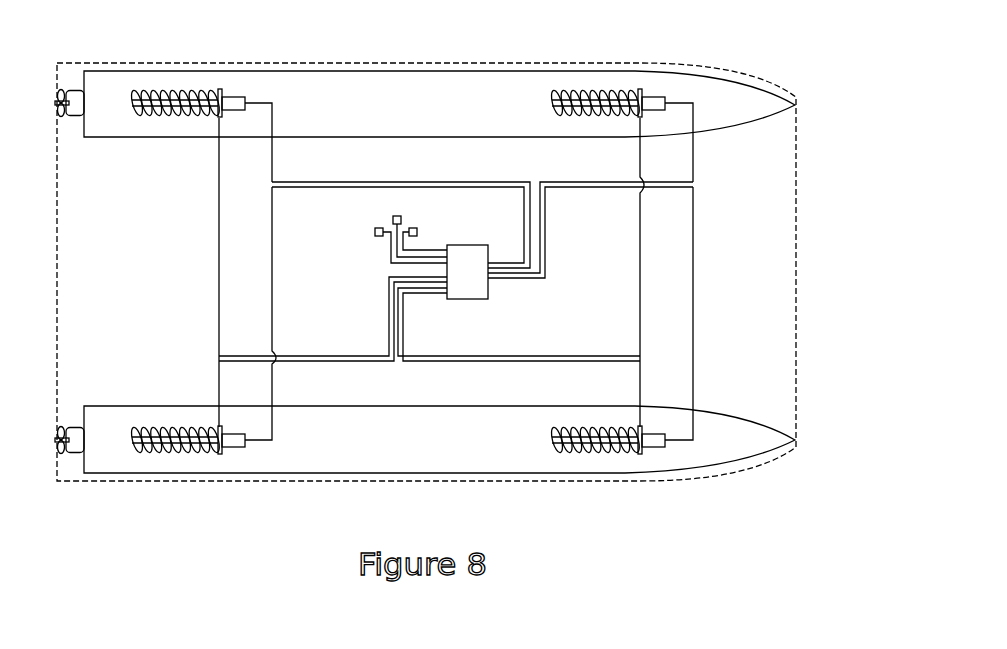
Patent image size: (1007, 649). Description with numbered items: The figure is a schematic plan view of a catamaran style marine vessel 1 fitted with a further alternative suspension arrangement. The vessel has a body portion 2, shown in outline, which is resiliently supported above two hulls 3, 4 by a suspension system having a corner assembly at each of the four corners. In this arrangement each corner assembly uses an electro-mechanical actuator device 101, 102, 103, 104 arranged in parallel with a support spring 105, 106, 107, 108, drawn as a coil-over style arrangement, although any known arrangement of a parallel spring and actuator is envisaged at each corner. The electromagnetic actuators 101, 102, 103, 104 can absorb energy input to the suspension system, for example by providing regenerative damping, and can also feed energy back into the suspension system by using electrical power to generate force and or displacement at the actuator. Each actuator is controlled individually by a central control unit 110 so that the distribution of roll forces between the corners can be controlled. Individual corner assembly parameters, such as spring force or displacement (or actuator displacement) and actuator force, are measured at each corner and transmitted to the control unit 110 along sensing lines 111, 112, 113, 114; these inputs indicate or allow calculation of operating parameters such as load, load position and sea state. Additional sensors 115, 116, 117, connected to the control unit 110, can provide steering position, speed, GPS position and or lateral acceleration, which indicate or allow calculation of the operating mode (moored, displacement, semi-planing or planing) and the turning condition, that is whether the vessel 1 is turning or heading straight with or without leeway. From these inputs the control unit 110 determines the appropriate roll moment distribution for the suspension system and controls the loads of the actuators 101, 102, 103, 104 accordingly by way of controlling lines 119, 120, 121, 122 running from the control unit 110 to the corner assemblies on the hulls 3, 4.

The marine vessel 1 is at (782, 53).
The body portion 2 is at (797, 191).
The hull 3 is at (362, 85).
The hull 4 is at (362, 458).
The electro-mechanical actuator device 101 is at (655, 99).
The electro-mechanical actuator device 102 is at (653, 444).
The electro-mechanical actuator device 103 is at (232, 101).
The electro-mechanical actuator device 104 is at (235, 444).
The support spring 105 is at (578, 93).
The support spring 106 is at (573, 453).
The support spring 107 is at (157, 93).
The support spring 108 is at (152, 453).
The central control unit 110 is at (476, 300).
The sensing line 111 is at (596, 355).
The sensing line 112 is at (596, 363).
The sensing line 113 is at (307, 357).
The sensing line 114 is at (307, 362).
The additional sensor 115 is at (420, 232).
The additional sensor 116 is at (401, 219).
The additional sensor 117 is at (378, 238).
The controlling line 119 is at (622, 181).
The controlling line 120 is at (622, 189).
The controlling line 121 is at (283, 181).
The controlling line 122 is at (283, 189).